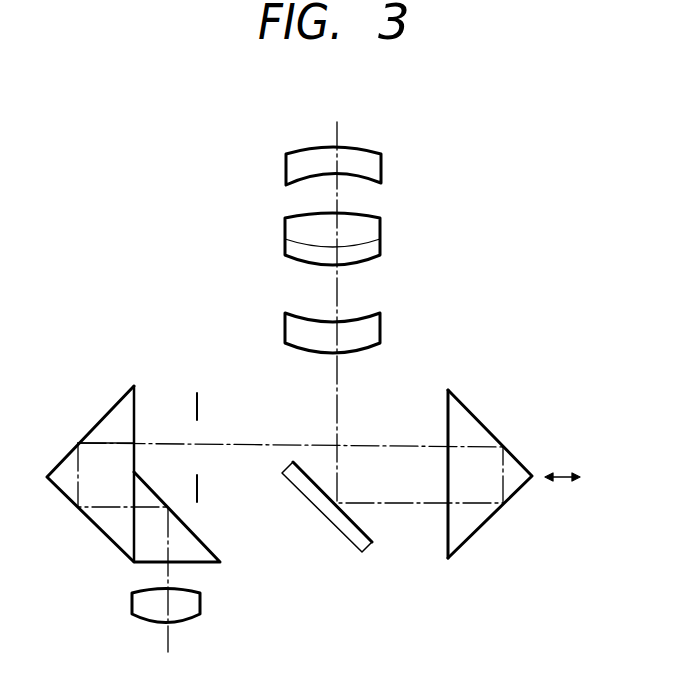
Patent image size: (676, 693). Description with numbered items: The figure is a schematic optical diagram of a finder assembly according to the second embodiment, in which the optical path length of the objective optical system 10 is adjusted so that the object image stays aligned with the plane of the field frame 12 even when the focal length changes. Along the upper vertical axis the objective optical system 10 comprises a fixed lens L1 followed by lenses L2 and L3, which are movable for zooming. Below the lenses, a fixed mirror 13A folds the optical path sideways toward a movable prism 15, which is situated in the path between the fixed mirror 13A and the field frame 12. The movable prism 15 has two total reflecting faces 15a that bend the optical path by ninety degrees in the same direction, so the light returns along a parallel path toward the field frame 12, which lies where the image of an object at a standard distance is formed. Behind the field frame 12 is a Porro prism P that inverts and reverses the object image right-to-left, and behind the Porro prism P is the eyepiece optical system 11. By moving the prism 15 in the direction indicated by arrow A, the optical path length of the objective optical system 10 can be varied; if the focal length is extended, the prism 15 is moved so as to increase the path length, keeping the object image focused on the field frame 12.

The objective optical system 10 is at (413, 143).
The fixed lens L1 is at (371, 172).
The zooming lens L2 is at (368, 228).
The zooming lens L3 is at (368, 332).
The field frame 12 is at (199, 406).
The Porro prism P is at (112, 527).
The eyepiece optical system 11 is at (192, 604).
The fixed mirror 13A is at (343, 528).
The movable prism 15 is at (473, 493).
The total reflecting faces 15a is at (517, 452).
The arrow A is at (563, 470).